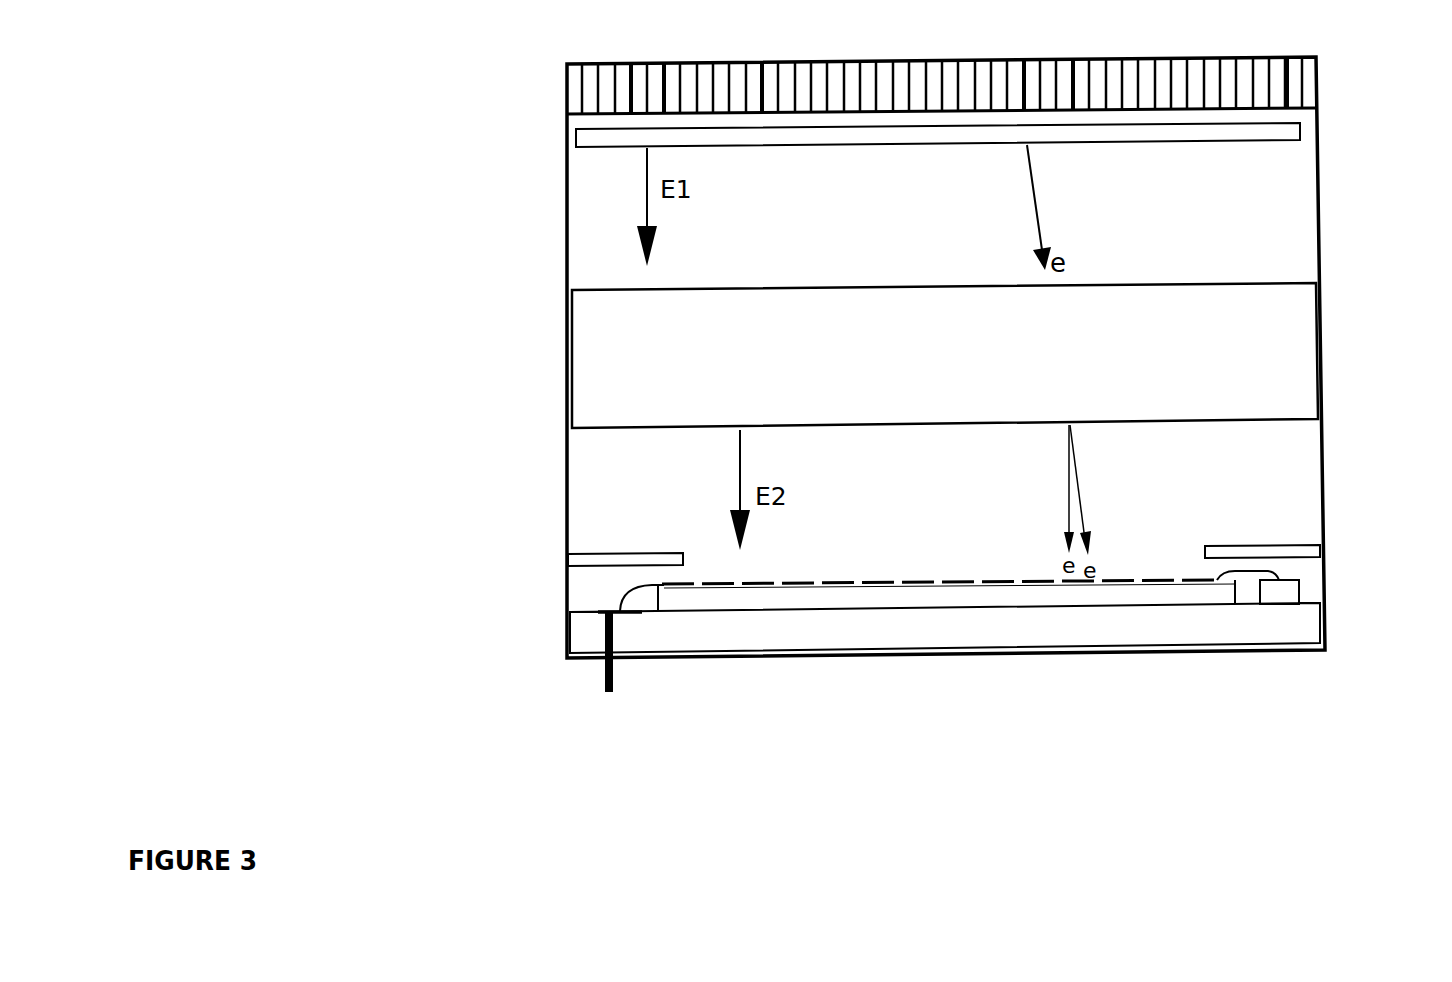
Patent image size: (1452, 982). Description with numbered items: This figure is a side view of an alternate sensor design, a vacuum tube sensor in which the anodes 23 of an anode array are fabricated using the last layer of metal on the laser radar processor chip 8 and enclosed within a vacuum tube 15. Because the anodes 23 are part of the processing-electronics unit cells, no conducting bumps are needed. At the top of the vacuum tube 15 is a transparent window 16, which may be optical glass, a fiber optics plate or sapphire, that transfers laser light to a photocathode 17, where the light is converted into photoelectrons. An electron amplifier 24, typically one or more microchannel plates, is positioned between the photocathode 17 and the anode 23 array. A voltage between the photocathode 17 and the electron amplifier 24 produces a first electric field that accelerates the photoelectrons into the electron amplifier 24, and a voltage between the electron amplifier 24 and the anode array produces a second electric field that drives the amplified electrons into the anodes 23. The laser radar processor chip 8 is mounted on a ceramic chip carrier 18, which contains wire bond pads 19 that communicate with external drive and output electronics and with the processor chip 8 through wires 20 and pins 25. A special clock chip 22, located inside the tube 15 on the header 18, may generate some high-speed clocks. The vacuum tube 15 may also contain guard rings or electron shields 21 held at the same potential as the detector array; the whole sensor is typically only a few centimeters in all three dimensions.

The laser radar processor chip 8 is at (945, 598).
The vacuum tube 15 is at (565, 250).
The transparent window 16 is at (1292, 85).
The photocathode 17 is at (1302, 133).
The ceramic chip carrier 18 is at (1305, 620).
The wire bond pads 19 is at (587, 614).
The wires 20 is at (633, 583).
The guard rings or electron shields 21 is at (592, 557).
The clock chip 22 is at (1273, 593).
The anodes 23 is at (718, 586).
The electron amplifier 24 is at (580, 385).
The pins 25 is at (600, 683).